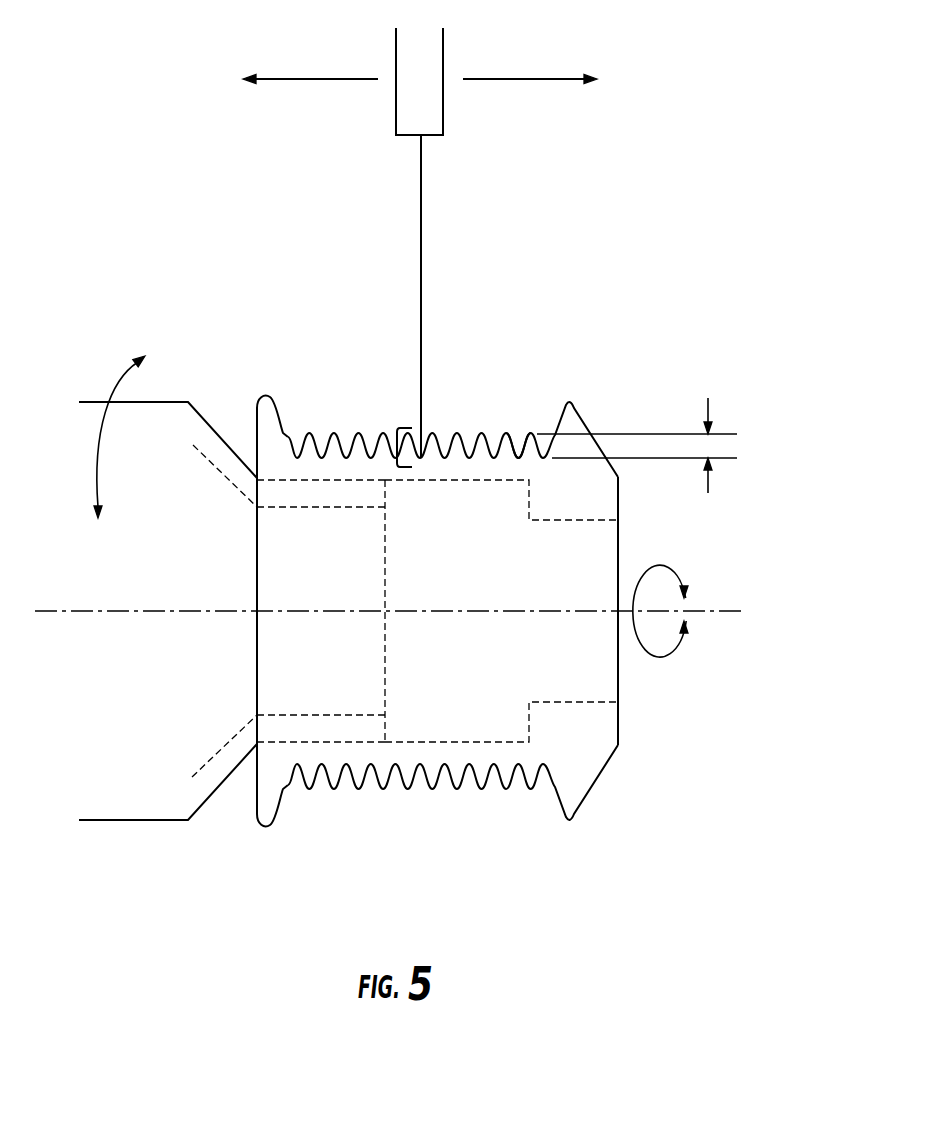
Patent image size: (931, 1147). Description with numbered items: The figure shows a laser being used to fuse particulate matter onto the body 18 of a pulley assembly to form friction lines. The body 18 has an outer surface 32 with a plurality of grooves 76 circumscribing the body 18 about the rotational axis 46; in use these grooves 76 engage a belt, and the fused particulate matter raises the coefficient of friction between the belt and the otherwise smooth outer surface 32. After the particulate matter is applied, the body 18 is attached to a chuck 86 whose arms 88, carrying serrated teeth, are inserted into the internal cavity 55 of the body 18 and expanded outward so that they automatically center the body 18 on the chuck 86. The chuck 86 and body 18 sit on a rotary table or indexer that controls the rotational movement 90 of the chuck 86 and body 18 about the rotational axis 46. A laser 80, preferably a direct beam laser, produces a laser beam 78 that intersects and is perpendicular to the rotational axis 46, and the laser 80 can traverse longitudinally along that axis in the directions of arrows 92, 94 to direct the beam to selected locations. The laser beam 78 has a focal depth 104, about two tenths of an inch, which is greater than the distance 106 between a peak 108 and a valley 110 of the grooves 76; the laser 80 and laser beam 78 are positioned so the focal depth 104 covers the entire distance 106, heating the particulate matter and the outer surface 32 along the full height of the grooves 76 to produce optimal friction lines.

The body 18 is at (495, 561).
The outer surface 32 is at (342, 435).
The rotational axis 46 is at (715, 612).
The internal cavity 55 is at (449, 708).
The grooves 76 is at (319, 428).
The laser beam 78 is at (421, 327).
The laser 80 is at (425, 70).
The chuck 86 is at (154, 775).
The arms 88 is at (297, 493).
The rotational movement 90 is at (116, 385).
The arrow 92 is at (505, 80).
The arrow 94 is at (297, 80).
The focal depth 104 is at (393, 448).
The distance 106 is at (708, 412).
The peak 108 is at (506, 430).
The valley 110 is at (518, 460).